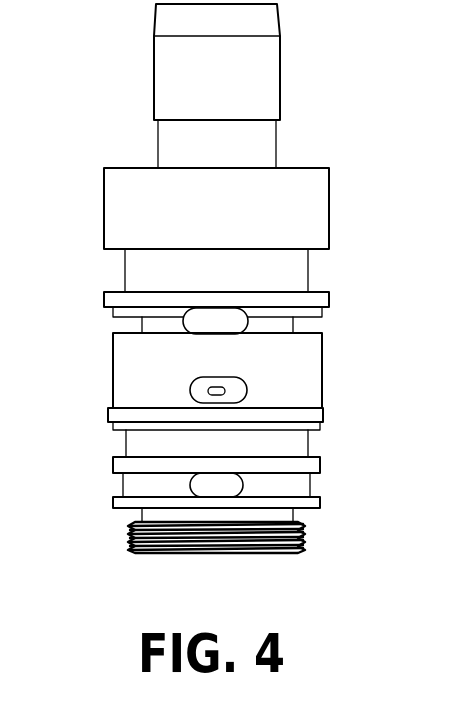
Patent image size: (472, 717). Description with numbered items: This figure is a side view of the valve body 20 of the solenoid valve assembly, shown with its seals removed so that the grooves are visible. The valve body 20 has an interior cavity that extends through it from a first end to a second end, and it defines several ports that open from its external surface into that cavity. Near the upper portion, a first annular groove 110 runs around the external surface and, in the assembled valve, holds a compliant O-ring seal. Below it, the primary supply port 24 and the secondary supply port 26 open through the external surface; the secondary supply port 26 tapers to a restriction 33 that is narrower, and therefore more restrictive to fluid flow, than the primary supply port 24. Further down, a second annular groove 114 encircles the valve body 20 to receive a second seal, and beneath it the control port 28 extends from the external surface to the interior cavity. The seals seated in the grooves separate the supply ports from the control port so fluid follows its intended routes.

The valve body 20 is at (329, 210).
The first annular groove 110 is at (308, 270).
The primary supply port 24 is at (232, 322).
The secondary supply port 26 is at (200, 390).
The restriction 33 is at (228, 390).
The second annular groove 114 is at (308, 445).
The control port 28 is at (232, 485).